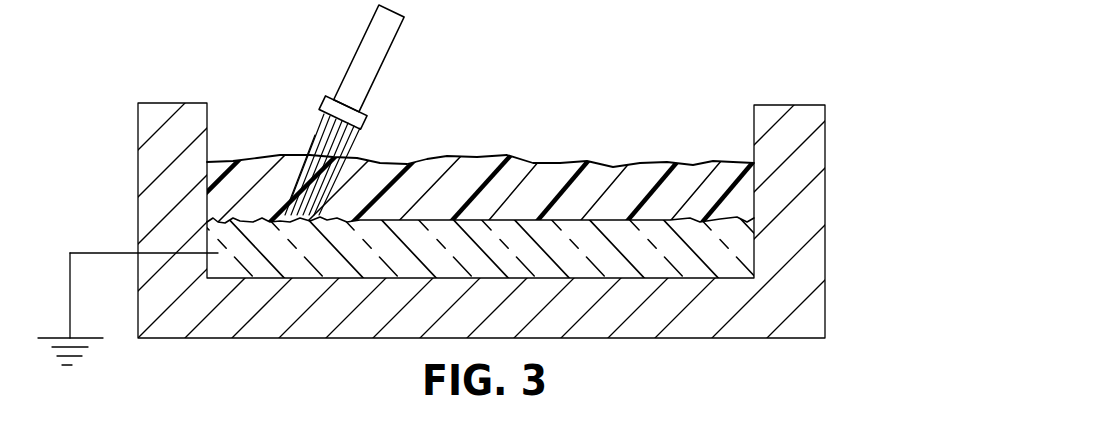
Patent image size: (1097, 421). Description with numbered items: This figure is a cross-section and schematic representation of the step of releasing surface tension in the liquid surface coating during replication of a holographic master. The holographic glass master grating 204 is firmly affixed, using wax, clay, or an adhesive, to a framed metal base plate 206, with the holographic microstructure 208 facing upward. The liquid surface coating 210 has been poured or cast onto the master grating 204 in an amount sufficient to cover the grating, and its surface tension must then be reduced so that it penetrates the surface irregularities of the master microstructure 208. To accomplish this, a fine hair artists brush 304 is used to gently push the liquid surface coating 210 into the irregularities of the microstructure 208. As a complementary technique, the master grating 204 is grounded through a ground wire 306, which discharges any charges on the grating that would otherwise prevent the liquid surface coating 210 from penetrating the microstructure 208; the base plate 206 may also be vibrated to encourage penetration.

The holographic glass master grating 204 is at (750, 257).
The framed metal base plate 206 is at (797, 330).
The holographic microstructure 208 is at (745, 217).
The liquid surface coating 210 is at (677, 163).
The fine hair artists brush 304 is at (380, 57).
The ground wire 306 is at (70, 287).